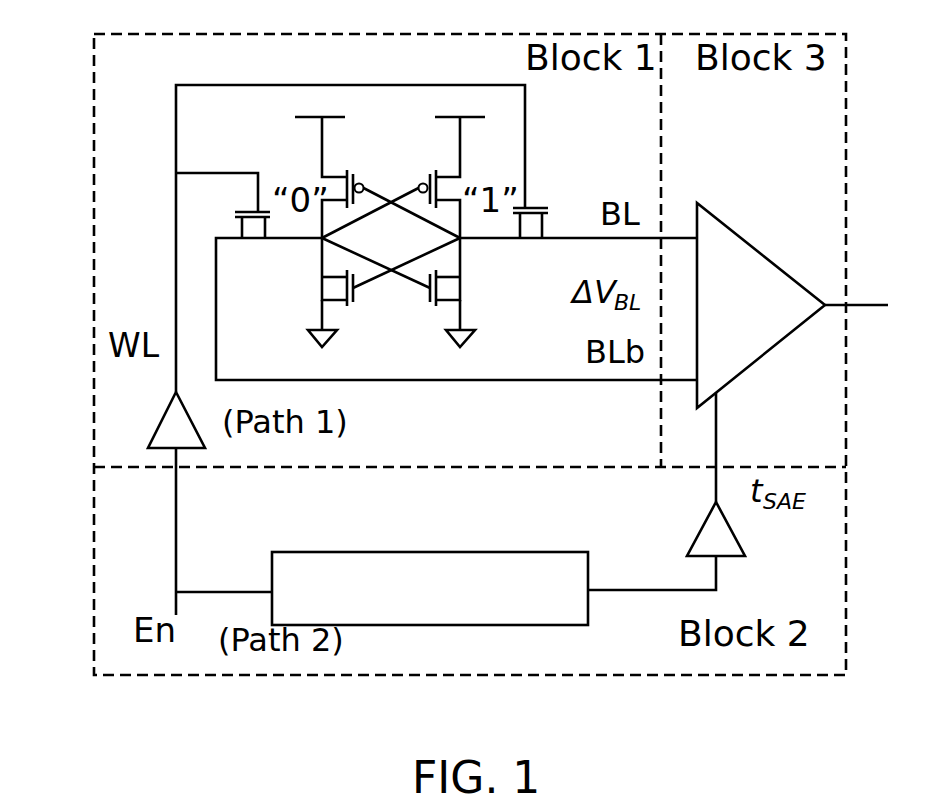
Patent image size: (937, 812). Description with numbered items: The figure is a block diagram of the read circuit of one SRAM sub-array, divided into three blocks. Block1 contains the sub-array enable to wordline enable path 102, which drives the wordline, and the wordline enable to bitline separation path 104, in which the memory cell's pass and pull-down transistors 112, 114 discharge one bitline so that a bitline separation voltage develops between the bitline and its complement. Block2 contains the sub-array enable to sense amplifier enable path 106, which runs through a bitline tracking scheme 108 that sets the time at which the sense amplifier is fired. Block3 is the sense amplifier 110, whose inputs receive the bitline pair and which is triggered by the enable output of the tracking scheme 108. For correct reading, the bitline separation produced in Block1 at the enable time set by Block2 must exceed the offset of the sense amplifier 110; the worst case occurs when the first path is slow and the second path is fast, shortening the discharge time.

The sub-array enable to wordline enable path 102 is at (119, 390).
The wordline enable to bitline separation path 104 is at (580, 185).
The sub-array enable to sense amplifier enable path 106 is at (421, 634).
The bitline tracking scheme 108 is at (443, 552).
The sense amplifier 110 is at (775, 340).
The pass transistor 112 is at (243, 234).
The pull-down transistor 114 is at (521, 240).